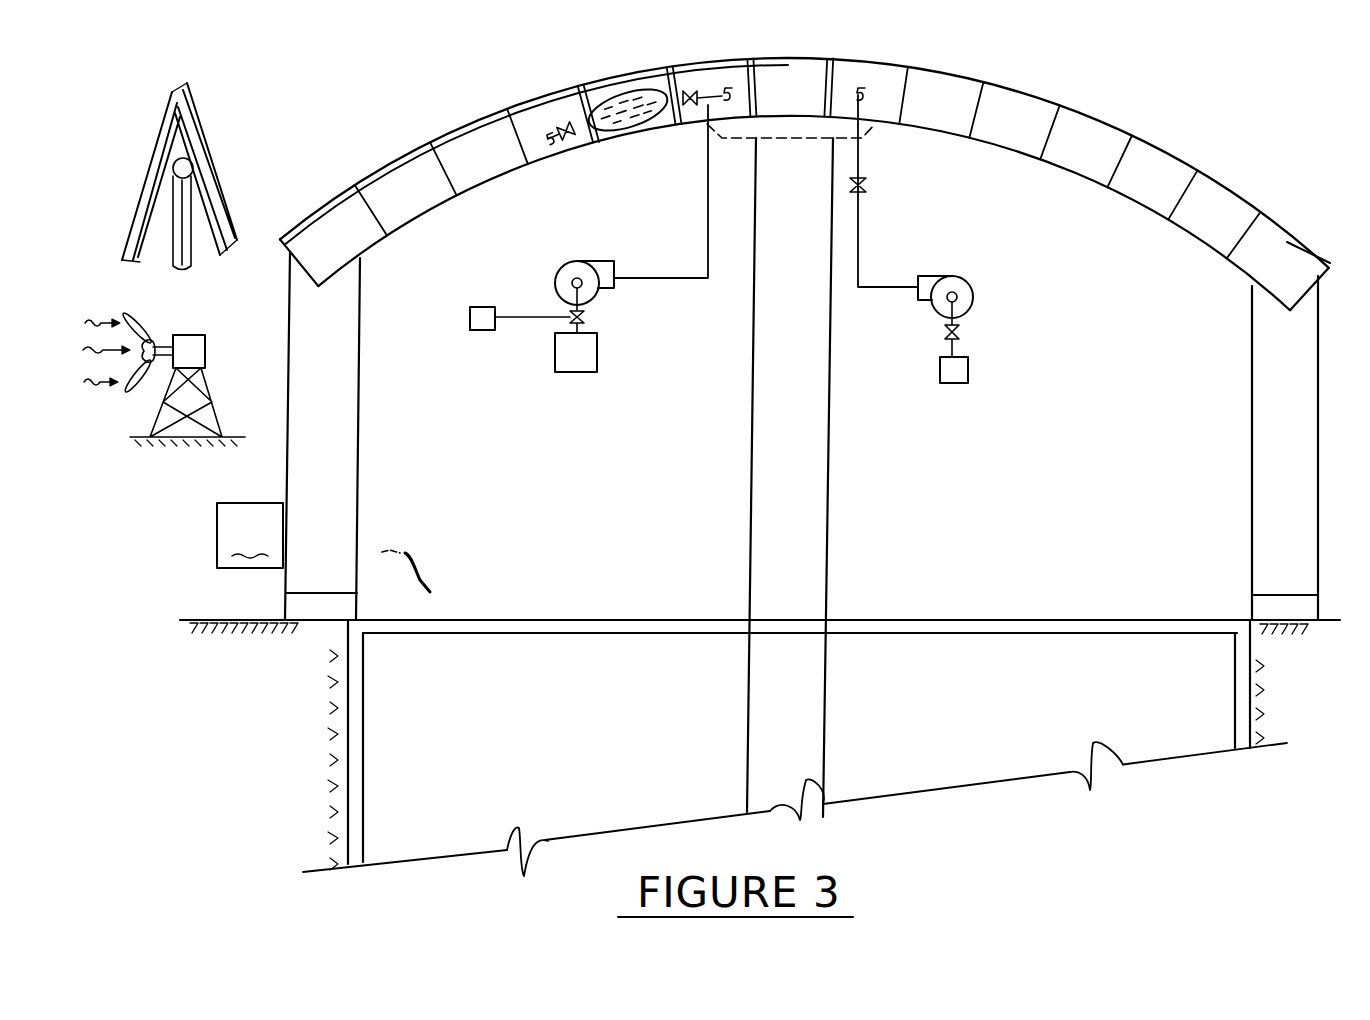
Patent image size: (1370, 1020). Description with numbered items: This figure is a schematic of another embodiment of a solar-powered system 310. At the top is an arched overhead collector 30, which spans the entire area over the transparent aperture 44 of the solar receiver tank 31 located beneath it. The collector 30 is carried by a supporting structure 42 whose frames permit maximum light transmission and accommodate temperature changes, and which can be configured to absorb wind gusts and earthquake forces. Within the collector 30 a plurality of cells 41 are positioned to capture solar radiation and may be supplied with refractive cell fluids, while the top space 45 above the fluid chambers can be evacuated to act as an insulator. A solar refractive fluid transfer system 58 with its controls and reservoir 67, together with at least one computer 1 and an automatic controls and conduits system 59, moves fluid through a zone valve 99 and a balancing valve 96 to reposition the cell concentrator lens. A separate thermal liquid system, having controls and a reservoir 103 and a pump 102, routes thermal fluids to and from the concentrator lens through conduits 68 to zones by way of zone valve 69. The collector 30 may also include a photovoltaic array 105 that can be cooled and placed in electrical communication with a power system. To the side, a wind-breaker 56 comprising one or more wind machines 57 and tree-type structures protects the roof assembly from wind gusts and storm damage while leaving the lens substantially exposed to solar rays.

The solar-powered system 310 is at (413, 81).
The collector 30 is at (1108, 188).
The top space 45 is at (1250, 125).
The cells 41 is at (626, 135).
The balancing valve 96 is at (566, 142).
The zone valve 99 is at (690, 108).
The automatic controls and conduits system 59 is at (708, 222).
The solar refractive fluid transfer system 58 is at (576, 261).
The controls and reservoir 67 is at (584, 318).
The computer 1 is at (481, 307).
The conduits 68 is at (862, 250).
The zone valve 69 is at (868, 191).
The pump 102 is at (972, 292).
The controls and reservoir 103 is at (960, 336).
The structure 42 is at (868, 140).
The transparent aperture 44 is at (541, 618).
The solar receiver tank 31 is at (362, 806).
The photovoltaic array 105 is at (250, 535).
The wind-breaker 56 is at (178, 331).
The wind machines 57 is at (205, 355).